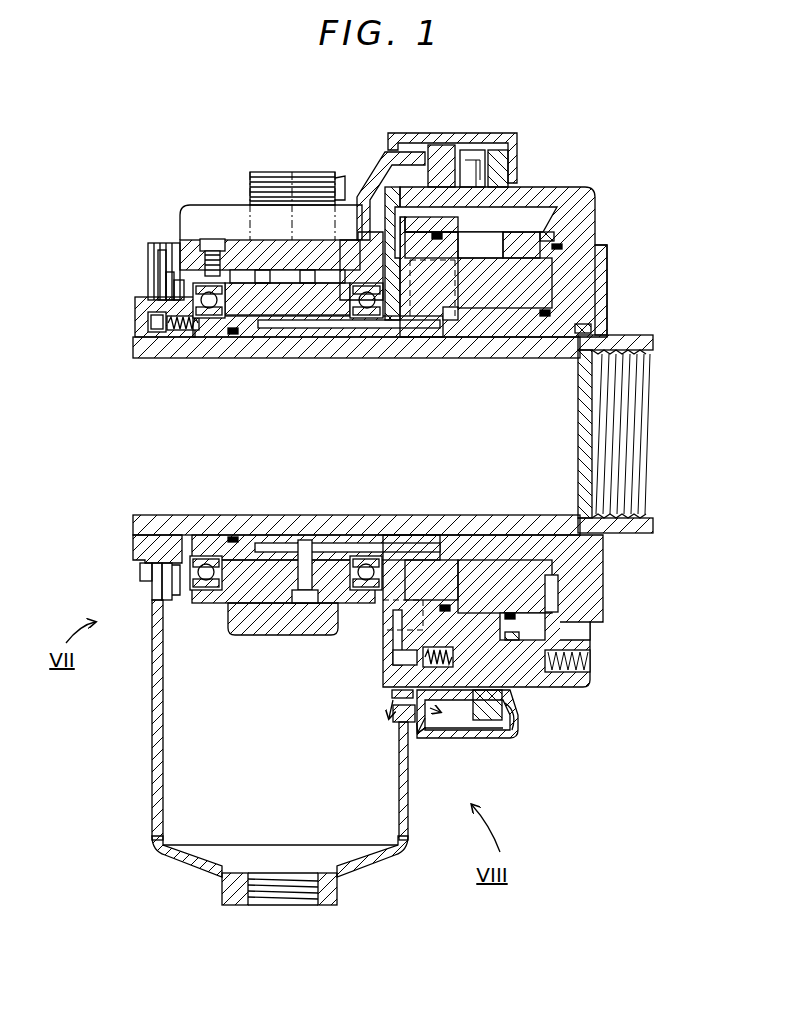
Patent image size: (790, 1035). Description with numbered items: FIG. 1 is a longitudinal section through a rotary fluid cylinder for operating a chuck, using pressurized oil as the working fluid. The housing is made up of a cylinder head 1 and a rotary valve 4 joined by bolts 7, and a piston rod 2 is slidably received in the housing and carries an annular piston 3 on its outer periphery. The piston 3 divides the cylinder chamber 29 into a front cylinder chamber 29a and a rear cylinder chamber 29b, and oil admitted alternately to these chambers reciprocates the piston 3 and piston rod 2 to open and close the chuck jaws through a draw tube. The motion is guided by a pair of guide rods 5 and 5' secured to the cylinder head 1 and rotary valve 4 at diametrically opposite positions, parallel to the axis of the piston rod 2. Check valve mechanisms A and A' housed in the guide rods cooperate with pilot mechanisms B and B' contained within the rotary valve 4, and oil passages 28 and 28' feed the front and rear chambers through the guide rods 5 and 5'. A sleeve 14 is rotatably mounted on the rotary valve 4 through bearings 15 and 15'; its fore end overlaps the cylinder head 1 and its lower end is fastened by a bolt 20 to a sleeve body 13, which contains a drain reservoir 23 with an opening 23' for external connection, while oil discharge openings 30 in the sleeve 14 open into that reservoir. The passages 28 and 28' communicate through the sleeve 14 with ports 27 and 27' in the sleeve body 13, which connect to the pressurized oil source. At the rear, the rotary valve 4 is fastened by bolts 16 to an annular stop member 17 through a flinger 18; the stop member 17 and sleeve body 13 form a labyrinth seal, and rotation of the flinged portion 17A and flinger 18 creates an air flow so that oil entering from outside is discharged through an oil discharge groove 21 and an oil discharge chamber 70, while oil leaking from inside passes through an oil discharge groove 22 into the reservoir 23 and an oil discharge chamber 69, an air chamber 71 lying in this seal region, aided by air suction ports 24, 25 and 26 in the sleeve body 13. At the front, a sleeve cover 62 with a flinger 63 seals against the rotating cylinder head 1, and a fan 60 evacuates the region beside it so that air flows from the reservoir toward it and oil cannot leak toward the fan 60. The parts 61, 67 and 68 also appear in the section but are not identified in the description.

The cylinder head 1 is at (592, 200).
The piston rod 2 is at (140, 345).
The annular piston 3 is at (548, 237).
The rotary valve 4 is at (395, 205).
The guide rod 5 is at (475, 192).
The guide rod 5' is at (513, 701).
The bolts 7 is at (392, 680).
The sleeve body 13 is at (357, 243).
The sleeve 14 is at (238, 242).
The bearing 15 is at (363, 344).
The bearing 15' is at (216, 339).
The bolts 16 is at (153, 323).
The annular stop member 17 is at (160, 553).
The flinged portion 17A is at (145, 585).
The flinger 18 is at (190, 568).
The bolt 20 is at (213, 240).
The oil discharge groove 21 is at (155, 582).
The oil discharge groove 22 is at (162, 588).
The drain reservoir 23 is at (256, 738).
The opening 23' is at (313, 898).
The air suction port 24 is at (160, 268).
The air suction port 25 is at (172, 275).
The air suction port 26 is at (176, 252).
The port 27 is at (292, 187).
The port 27' is at (315, 155).
The oil passage 28 is at (349, 362).
The oil passage 28' is at (316, 514).
The cylinder chamber 29 is at (490, 268).
The front cylinder chamber 29a is at (560, 628).
The rear cylinder chamber 29b is at (513, 708).
The oil discharge openings 30 is at (232, 606).
The fan 60 is at (490, 722).
The plate 61 is at (455, 737).
The sleeve cover 62 is at (438, 728).
The flinger 63 is at (402, 705).
The cap 67 is at (440, 165).
The cap member 68 is at (468, 248).
The oil discharge chamber 69 is at (167, 274).
The oil discharge chamber 70 is at (178, 296).
The air chamber 71 is at (170, 288).
The check valve mechanism A is at (505, 331).
The check valve mechanism A' is at (499, 554).
The pilot mechanism B is at (438, 318).
The pilot mechanism B' is at (431, 531).